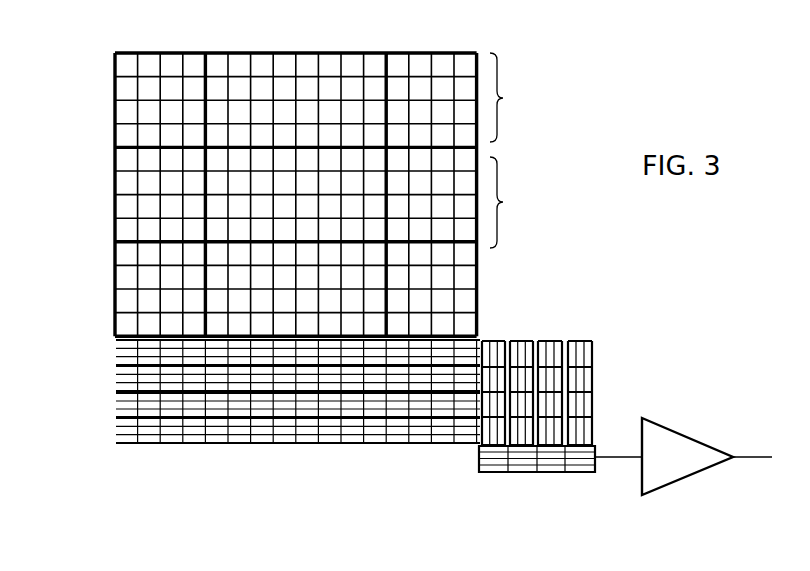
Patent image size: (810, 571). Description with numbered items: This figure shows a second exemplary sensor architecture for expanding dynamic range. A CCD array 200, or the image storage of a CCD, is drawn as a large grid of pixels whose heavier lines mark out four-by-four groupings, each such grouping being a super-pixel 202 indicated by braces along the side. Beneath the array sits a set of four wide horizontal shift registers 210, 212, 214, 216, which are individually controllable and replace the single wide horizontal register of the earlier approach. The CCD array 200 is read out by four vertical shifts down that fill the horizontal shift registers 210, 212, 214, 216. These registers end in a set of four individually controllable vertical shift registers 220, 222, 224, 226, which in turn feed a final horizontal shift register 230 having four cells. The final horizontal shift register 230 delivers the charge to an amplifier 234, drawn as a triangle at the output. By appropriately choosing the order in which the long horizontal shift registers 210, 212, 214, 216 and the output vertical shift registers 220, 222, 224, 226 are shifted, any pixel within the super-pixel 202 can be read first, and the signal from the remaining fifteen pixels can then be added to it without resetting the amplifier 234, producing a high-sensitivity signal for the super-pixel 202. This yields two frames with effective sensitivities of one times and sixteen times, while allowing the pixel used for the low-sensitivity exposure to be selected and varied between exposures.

The CCD array 200 is at (478, 54).
The super-pixel 202 is at (505, 201).
The wide horizontal shift register 210 is at (117, 345).
The wide horizontal shift register 212 is at (117, 382).
The wide horizontal shift register 214 is at (117, 415).
The wide horizontal shift register 216 is at (117, 435).
The vertical shift register 220 is at (493, 340).
The vertical shift register 222 is at (523, 340).
The vertical shift register 224 is at (557, 341).
The vertical shift register 226 is at (593, 343).
The final horizontal shift register 230 is at (523, 472).
The amplifier 234 is at (683, 455).